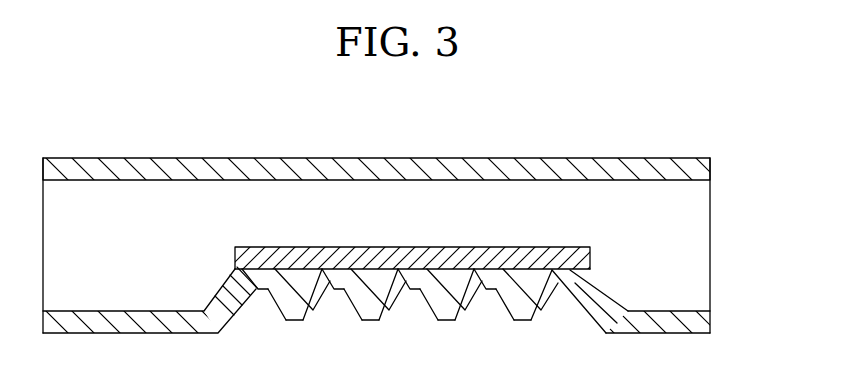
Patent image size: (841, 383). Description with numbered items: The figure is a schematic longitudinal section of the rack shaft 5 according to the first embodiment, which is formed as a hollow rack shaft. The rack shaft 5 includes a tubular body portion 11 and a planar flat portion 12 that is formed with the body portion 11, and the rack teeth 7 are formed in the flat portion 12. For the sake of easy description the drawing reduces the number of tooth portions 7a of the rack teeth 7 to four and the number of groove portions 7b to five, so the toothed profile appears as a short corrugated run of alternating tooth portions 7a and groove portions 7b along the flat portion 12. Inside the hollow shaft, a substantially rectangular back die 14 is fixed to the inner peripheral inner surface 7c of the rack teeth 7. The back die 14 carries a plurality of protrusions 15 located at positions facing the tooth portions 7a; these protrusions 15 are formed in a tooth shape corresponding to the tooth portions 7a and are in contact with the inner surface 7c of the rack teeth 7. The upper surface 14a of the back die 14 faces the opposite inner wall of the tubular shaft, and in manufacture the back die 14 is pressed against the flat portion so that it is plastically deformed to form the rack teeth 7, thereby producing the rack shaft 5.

The rack shaft 5 is at (667, 123).
The body portion 11 is at (548, 164).
The flat portion 12 is at (594, 276).
The back die 14 is at (590, 248).
The upper surface of the back die 14a is at (463, 247).
The rack teeth 7 is at (364, 323).
The tooth portions 7a is at (293, 322).
The groove portions 7b is at (396, 315).
The inner surface of the rack teeth 7c is at (344, 247).
The protrusions 15 is at (520, 292).